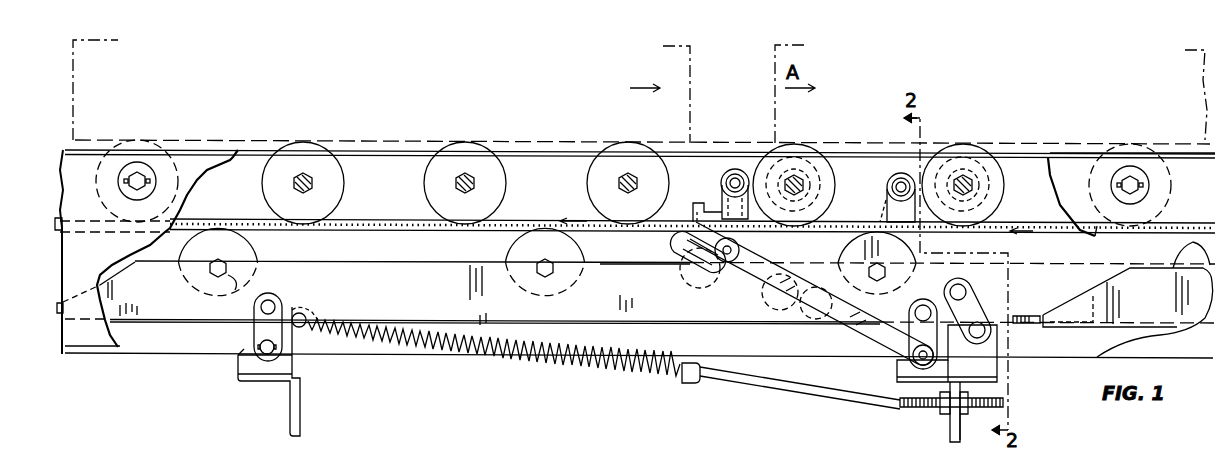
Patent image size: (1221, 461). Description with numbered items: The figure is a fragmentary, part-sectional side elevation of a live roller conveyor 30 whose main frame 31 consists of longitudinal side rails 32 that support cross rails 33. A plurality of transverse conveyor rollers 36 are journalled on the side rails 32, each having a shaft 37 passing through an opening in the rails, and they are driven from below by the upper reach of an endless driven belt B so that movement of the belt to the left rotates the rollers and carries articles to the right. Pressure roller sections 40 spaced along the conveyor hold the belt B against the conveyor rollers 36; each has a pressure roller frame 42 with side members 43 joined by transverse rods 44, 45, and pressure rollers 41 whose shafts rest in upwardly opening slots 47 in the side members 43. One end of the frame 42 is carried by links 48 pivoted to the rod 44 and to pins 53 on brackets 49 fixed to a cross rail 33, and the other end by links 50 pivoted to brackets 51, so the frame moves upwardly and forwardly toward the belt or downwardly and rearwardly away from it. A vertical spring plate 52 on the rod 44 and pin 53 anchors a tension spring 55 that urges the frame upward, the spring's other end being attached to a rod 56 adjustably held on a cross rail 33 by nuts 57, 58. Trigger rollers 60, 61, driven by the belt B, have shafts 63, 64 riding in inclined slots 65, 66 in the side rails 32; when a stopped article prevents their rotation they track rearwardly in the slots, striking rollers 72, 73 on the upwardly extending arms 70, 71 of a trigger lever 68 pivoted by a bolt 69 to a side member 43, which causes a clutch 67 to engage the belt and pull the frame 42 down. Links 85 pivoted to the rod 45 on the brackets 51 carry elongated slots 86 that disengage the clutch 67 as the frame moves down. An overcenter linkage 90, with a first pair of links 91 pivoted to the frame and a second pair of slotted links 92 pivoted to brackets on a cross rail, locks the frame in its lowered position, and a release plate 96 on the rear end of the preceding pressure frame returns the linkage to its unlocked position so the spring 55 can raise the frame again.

The live roller conveyor 30 is at (564, 131).
The main frame 31 is at (1090, 142).
The side rails 32 is at (1095, 236).
The cross rails 33 is at (301, 398).
The conveyor rollers 36 is at (303, 150).
The shaft 37 is at (480, 181).
The pressure roller assemblies or sections 40 is at (406, 264).
The pressure rollers 41 is at (245, 262).
The pressure roller frame 42 is at (720, 331).
The side members 43 is at (628, 303).
The transverse rod 44 is at (272, 304).
The transverse rod 45 is at (905, 360).
The upwardly opening slots 47 is at (240, 282).
The links 48 is at (257, 328).
The brackets 49 is at (240, 368).
The links 50 is at (947, 353).
The brackets 51 is at (947, 370).
The vertical spring plate 52 is at (310, 330).
The pins 53 is at (266, 355).
The tension spring 55 is at (548, 364).
The rod 56 is at (745, 392).
The nut 57 is at (940, 406).
The nut 58 is at (964, 420).
The trigger roller 60 is at (805, 148).
The trigger roller 61 is at (978, 148).
The shaft 63 is at (803, 177).
The shaft 64 is at (972, 178).
The slot 65 is at (773, 165).
The slot 66 is at (950, 165).
The clutch 67 is at (706, 200).
The trigger lever 68 is at (875, 218).
The bolt 69 is at (806, 318).
The arm 70 is at (726, 192).
The arm 71 is at (885, 205).
The roller 72 is at (735, 170).
The roller 73 is at (898, 176).
The links 85 is at (768, 260).
The elongated slot 86 is at (684, 248).
The overcenter linkage 90 is at (982, 287).
The first pair of links 91 is at (935, 292).
The second pair of links 92 is at (988, 312).
The release plate 96 is at (58, 304).
The endless driven belt B is at (508, 224).